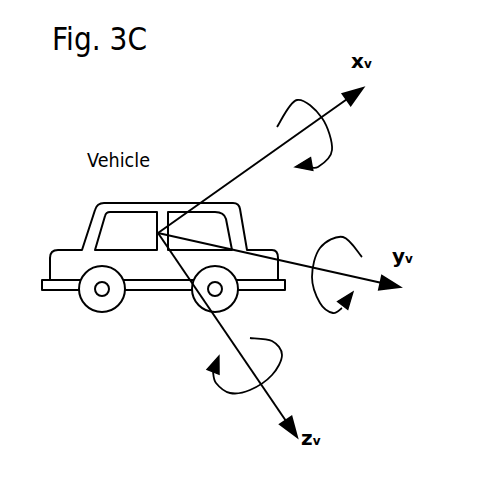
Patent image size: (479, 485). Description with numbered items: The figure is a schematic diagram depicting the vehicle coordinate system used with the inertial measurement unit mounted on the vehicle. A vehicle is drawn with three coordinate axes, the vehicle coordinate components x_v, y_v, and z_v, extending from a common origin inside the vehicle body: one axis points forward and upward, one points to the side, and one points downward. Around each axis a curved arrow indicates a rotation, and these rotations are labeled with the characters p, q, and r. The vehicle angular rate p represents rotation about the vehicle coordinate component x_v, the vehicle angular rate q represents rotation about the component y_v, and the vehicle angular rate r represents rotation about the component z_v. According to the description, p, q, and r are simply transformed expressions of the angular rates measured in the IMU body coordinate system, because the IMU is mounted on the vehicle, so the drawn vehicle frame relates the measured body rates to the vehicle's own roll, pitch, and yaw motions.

The vehicle angular rate about vehicle x-axis p is at (300, 120).
The vehicle angular rate about vehicle y-axis q is at (335, 261).
The vehicle angular rate about vehicle z-axis r is at (244, 379).